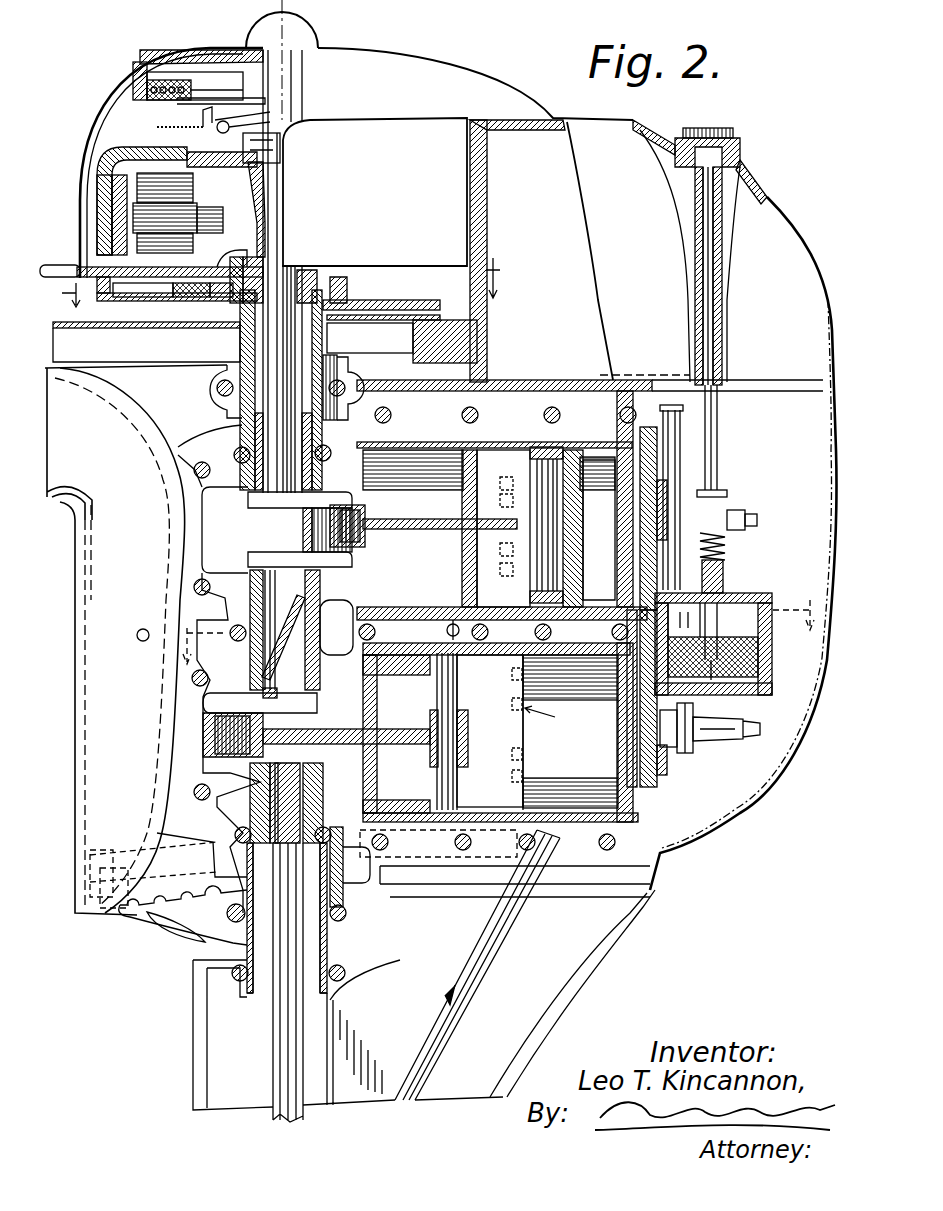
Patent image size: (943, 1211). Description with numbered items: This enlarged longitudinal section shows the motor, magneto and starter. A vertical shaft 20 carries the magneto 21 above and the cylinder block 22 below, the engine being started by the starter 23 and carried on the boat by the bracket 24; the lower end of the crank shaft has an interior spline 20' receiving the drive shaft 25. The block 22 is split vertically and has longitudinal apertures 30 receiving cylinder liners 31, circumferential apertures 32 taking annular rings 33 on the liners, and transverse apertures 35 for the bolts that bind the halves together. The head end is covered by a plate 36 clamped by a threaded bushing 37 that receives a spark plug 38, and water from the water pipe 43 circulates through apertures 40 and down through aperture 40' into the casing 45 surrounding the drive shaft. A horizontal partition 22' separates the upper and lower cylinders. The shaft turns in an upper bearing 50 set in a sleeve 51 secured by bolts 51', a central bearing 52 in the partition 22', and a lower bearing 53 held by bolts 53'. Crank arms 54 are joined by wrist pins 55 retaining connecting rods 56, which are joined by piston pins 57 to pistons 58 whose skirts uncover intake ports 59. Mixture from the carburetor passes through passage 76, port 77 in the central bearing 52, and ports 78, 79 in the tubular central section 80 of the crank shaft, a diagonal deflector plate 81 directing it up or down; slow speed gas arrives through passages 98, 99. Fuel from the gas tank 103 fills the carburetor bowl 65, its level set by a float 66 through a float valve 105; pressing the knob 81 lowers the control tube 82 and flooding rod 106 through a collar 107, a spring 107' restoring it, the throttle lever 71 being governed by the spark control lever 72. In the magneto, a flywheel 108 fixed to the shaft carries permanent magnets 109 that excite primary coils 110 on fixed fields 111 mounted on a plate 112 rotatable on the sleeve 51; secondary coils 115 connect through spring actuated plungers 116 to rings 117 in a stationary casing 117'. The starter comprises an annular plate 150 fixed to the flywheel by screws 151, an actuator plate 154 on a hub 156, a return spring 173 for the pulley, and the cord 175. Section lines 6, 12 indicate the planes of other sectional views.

The section line 6 is at (498, 624).
The section line 12 is at (280, 282).
The crank shaft 20 is at (312, 271).
The interior spline 20' is at (266, 799).
The magneto 21 is at (112, 214).
The cylinder block 22 is at (598, 528).
The horizontal partition 22' is at (484, 765).
The starter 23 is at (156, 59).
The bracket 24 is at (135, 554).
The drive shaft 25 is at (273, 1061).
The longitudinal apertures 30 is at (428, 440).
The cylinder liners 31 is at (462, 443).
The circumferential apertures 32 is at (528, 440).
The annular rings 33 is at (522, 440).
The transverse apertures 35 is at (465, 413).
The plate 36 is at (657, 787).
The threaded bushing 37 is at (668, 495).
The spark plugs 38 is at (757, 516).
The apertures 40 is at (518, 653).
The aperture 40' is at (698, 626).
The water pipe 43 is at (480, 980).
The casing 45 is at (193, 1061).
The upper bearing 50 is at (323, 432).
The sleeve 51 is at (311, 390).
The bolts 51' is at (284, 476).
The central bearing 52 is at (250, 590).
The lower bearing 53 is at (300, 873).
The bolts 53' is at (304, 888).
The crank arms 54 is at (290, 500).
The wrist pins 55 is at (355, 550).
The connecting rods 56 is at (425, 518).
The piston pins 57 is at (566, 543).
The pistons 58 is at (440, 482).
The intake ports 59 is at (495, 560).
The carburetor bowl 65 is at (765, 668).
The float 66 is at (765, 646).
The throttle lever 71 is at (683, 430).
The spark control lever 72 is at (48, 265).
The passage 76 is at (300, 620).
The port 77 is at (322, 605).
The port 78 is at (295, 640).
The port 79 is at (268, 630).
The tubular central section 80 is at (263, 589).
The deflector plate 81 is at (708, 127).
The tubular shaft 82 is at (720, 455).
The passage 98 is at (493, 635).
The passage 99 is at (452, 616).
The gas tank 103 is at (555, 208).
The float valve 105 is at (755, 596).
The flooding rod 106 is at (725, 568).
The collar 107 is at (742, 480).
The spring 107' is at (752, 544).
The flywheel 108 is at (140, 144).
The permanent magnets 109 is at (97, 186).
The primary coils 110 is at (180, 200).
The fixed fields 111 is at (223, 219).
The plate 112 is at (230, 262).
The secondary coils 115 is at (190, 186).
The spring actuated plungers 116 is at (130, 322).
The rings 117 is at (146, 342).
The casing 117' is at (295, 311).
The annular plate 150 is at (192, 122).
The screws 151 is at (270, 118).
The actuator plate 154 is at (266, 100).
The hub 156 is at (305, 35).
The spring 173 is at (205, 70).
The rope or cord 175 is at (165, 82).